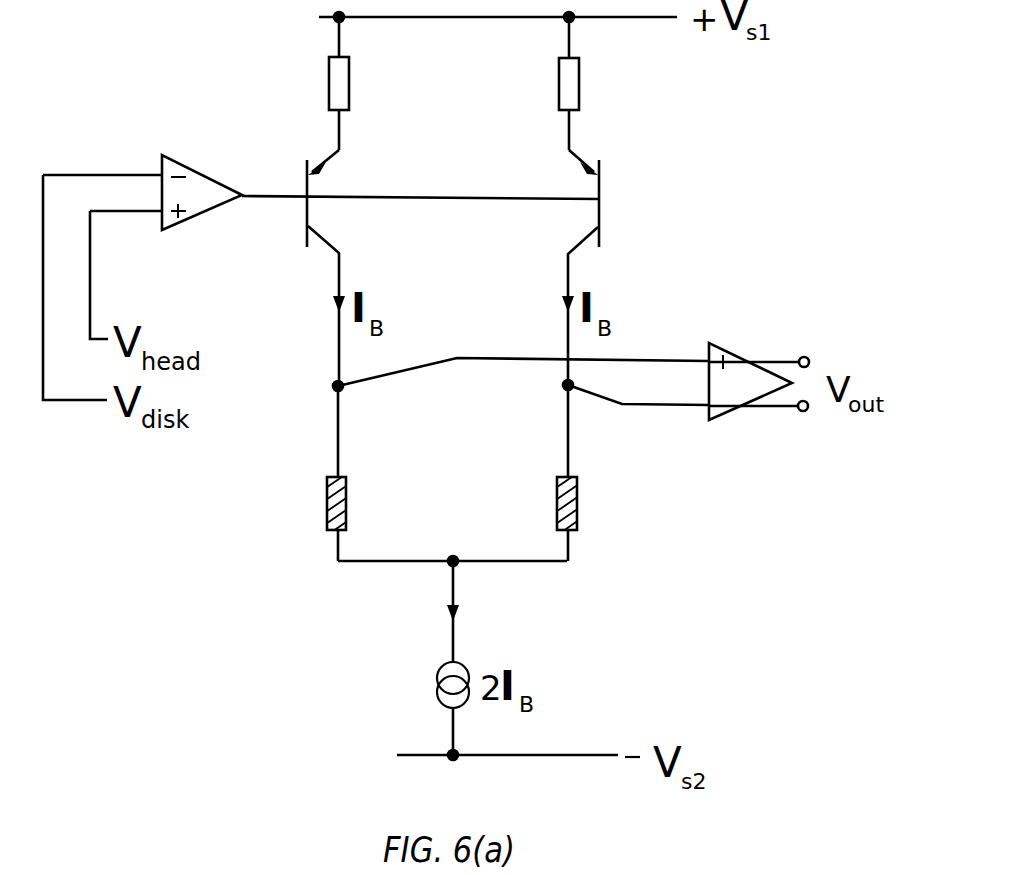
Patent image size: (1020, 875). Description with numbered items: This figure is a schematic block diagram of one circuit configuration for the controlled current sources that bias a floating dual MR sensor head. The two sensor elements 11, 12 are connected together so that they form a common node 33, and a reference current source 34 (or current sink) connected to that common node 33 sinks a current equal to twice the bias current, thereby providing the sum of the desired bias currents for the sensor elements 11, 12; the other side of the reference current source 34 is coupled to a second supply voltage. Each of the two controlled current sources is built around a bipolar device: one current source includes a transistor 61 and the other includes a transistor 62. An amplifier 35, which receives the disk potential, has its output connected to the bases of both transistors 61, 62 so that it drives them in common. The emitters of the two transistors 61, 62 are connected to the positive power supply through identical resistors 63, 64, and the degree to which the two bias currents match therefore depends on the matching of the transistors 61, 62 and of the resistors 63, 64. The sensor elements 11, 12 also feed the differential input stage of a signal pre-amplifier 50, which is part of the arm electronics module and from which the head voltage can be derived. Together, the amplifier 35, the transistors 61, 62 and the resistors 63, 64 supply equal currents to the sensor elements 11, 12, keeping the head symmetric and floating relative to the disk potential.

The sensor element 11 is at (338, 473).
The sensor element 12 is at (567, 473).
The common node 33 is at (452, 539).
The reference current source 34 is at (431, 658).
The amplifier 35 is at (214, 189).
The signal pre-amplifier 50 is at (747, 392).
The transistor 61 is at (314, 268).
The transistor 62 is at (609, 267).
The resistor 63 is at (314, 83).
The resistor 64 is at (594, 83).